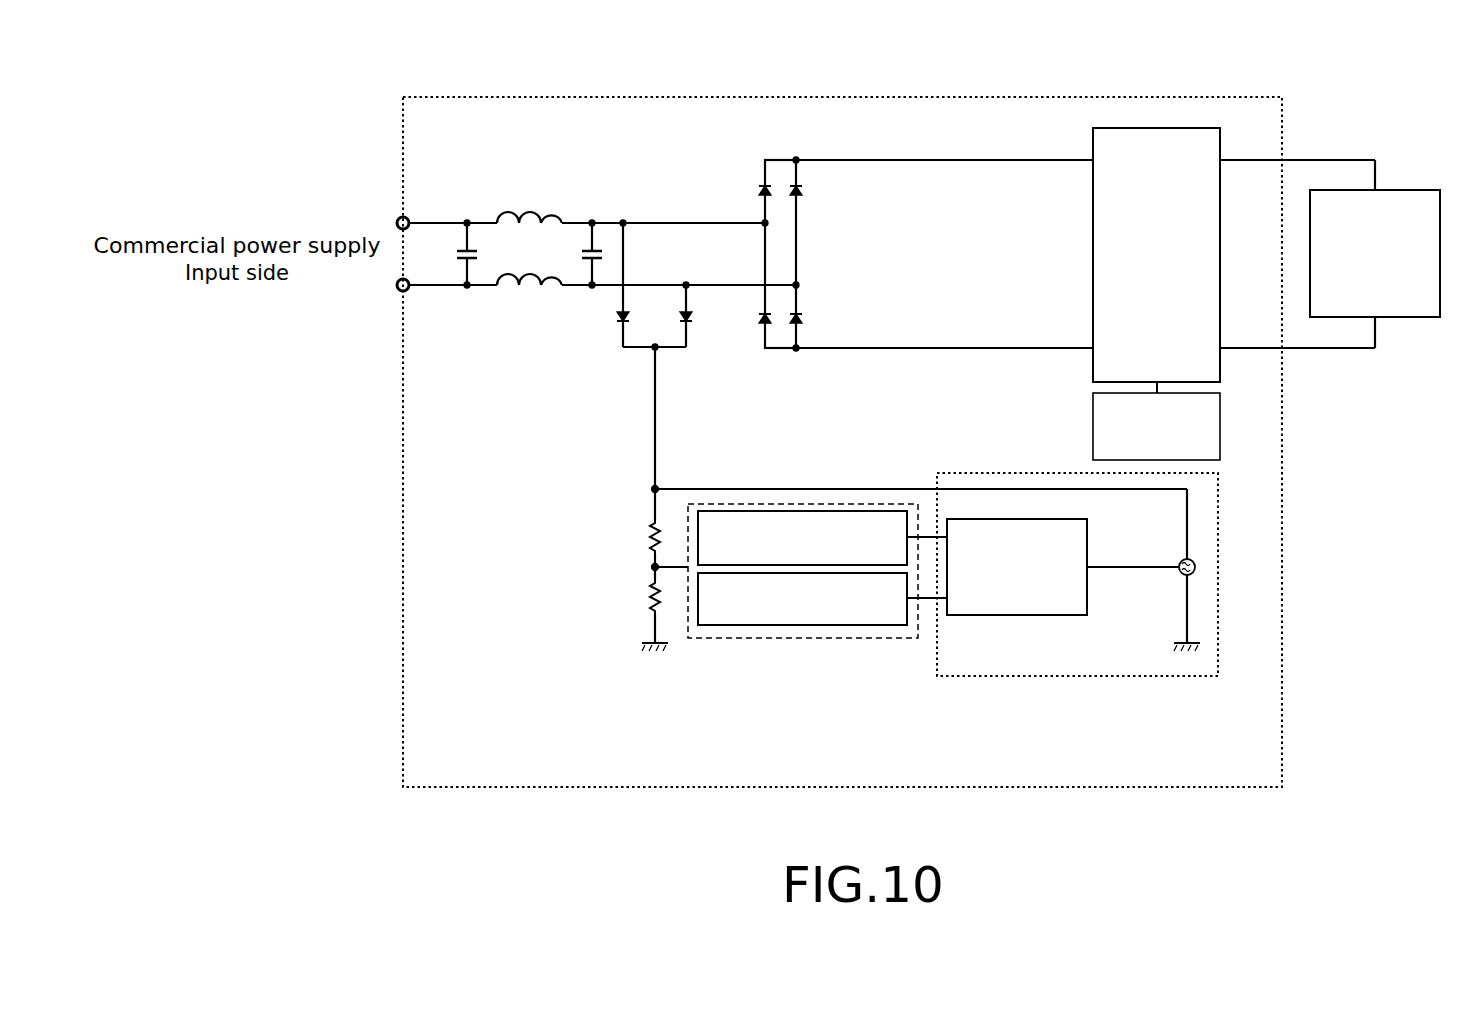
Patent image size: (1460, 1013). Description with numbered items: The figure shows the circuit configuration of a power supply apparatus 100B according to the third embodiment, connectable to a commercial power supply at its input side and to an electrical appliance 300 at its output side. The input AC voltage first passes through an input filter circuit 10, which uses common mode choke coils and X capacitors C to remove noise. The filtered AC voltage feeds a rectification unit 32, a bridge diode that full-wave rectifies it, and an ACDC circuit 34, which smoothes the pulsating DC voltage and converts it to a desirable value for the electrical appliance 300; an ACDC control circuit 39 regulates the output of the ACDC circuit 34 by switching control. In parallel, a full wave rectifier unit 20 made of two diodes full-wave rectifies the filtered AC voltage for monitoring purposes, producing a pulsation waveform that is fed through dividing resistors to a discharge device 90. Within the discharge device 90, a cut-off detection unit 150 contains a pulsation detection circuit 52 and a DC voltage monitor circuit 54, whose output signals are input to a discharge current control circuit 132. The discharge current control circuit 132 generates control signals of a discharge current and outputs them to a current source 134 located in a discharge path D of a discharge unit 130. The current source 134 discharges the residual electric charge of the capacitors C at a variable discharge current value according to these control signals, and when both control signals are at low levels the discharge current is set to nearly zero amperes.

The power supply apparatus 100B is at (816, 97).
The input filter circuit 10 is at (532, 206).
The capacitor C is at (461, 262).
The full wave rectifier unit 20 is at (616, 345).
The rectification unit 32 is at (806, 222).
The ACDC circuit 34 is at (1092, 250).
The ACDC control circuit 39 is at (1092, 426).
The electrical appliance 300 is at (1410, 189).
The discharge device 90 is at (890, 464).
The pulsation detection circuit 52 is at (748, 511).
The DC voltage monitor circuit 54 is at (742, 626).
The cut-off detection unit 150 is at (817, 575).
The discharge unit 130 is at (1077, 618).
The discharge current control circuit 132 is at (993, 615).
The current source 134 is at (1180, 576).
The discharge path D is at (1185, 530).